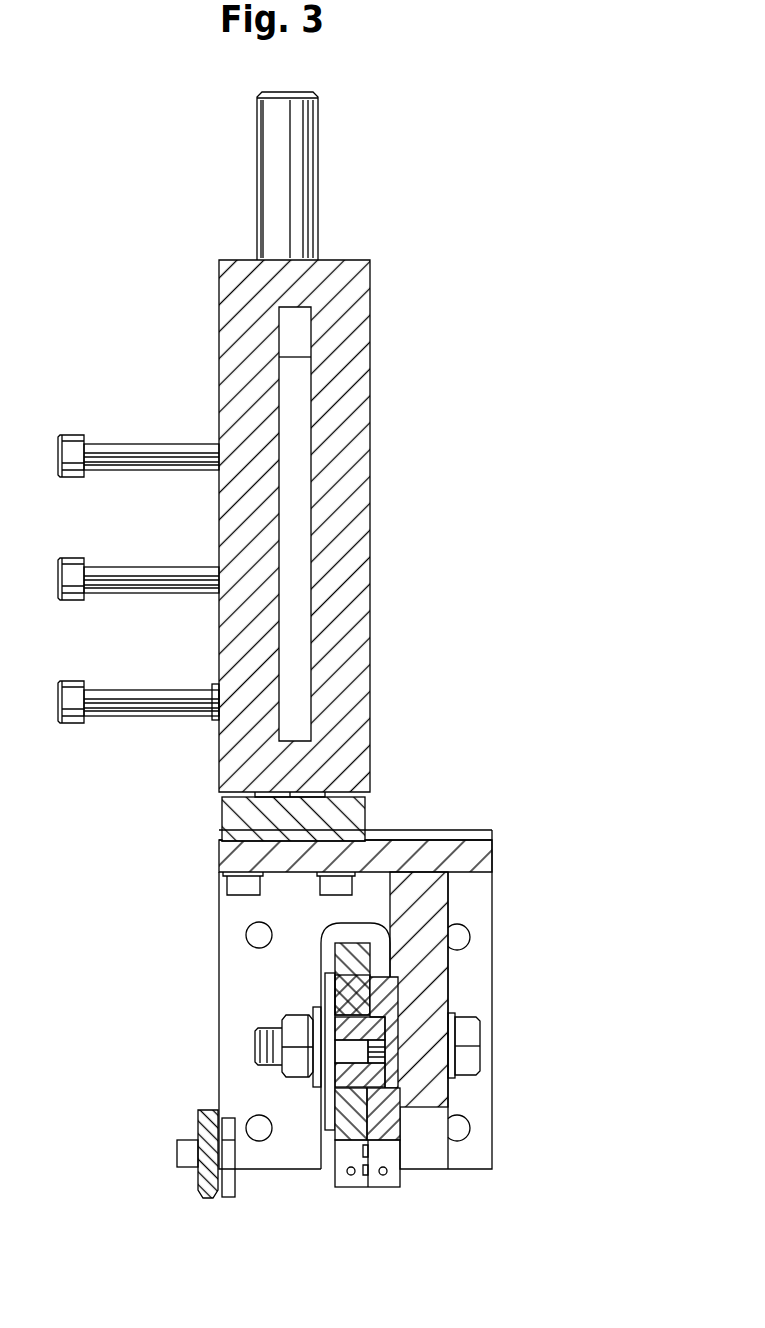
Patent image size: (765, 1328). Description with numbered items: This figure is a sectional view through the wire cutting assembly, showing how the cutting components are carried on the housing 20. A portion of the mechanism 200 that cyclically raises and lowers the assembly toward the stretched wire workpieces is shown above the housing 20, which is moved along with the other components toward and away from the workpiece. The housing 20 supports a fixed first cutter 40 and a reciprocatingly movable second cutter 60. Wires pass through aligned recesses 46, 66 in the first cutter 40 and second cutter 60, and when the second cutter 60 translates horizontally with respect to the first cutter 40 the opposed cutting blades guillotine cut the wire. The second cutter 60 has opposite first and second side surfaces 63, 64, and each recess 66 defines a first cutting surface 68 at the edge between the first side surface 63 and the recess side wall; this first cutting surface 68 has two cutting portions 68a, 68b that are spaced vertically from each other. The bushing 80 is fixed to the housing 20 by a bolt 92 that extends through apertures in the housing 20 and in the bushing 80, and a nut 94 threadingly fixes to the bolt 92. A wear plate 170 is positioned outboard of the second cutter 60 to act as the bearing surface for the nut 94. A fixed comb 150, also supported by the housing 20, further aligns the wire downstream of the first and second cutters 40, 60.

The raising and lowering mechanism 200 is at (351, 579).
The housing 20 is at (437, 885).
The first side surface 63 is at (373, 957).
The bolt 92 is at (484, 1015).
The first cutter 40 is at (386, 1111).
The second side surface 64 is at (321, 956).
The wear plate 170 is at (322, 989).
The nut 94 is at (295, 1041).
The bushing 80 is at (333, 1070).
The fixed comb 150 is at (203, 1175).
The second cutter 60 is at (323, 1122).
The recess 66 is at (347, 1174).
The first cutting portion 68a is at (353, 1173).
The first cutting surface 68 is at (373, 1187).
The recess 46 is at (385, 1175).
The second cutting portion 68b is at (368, 1152).